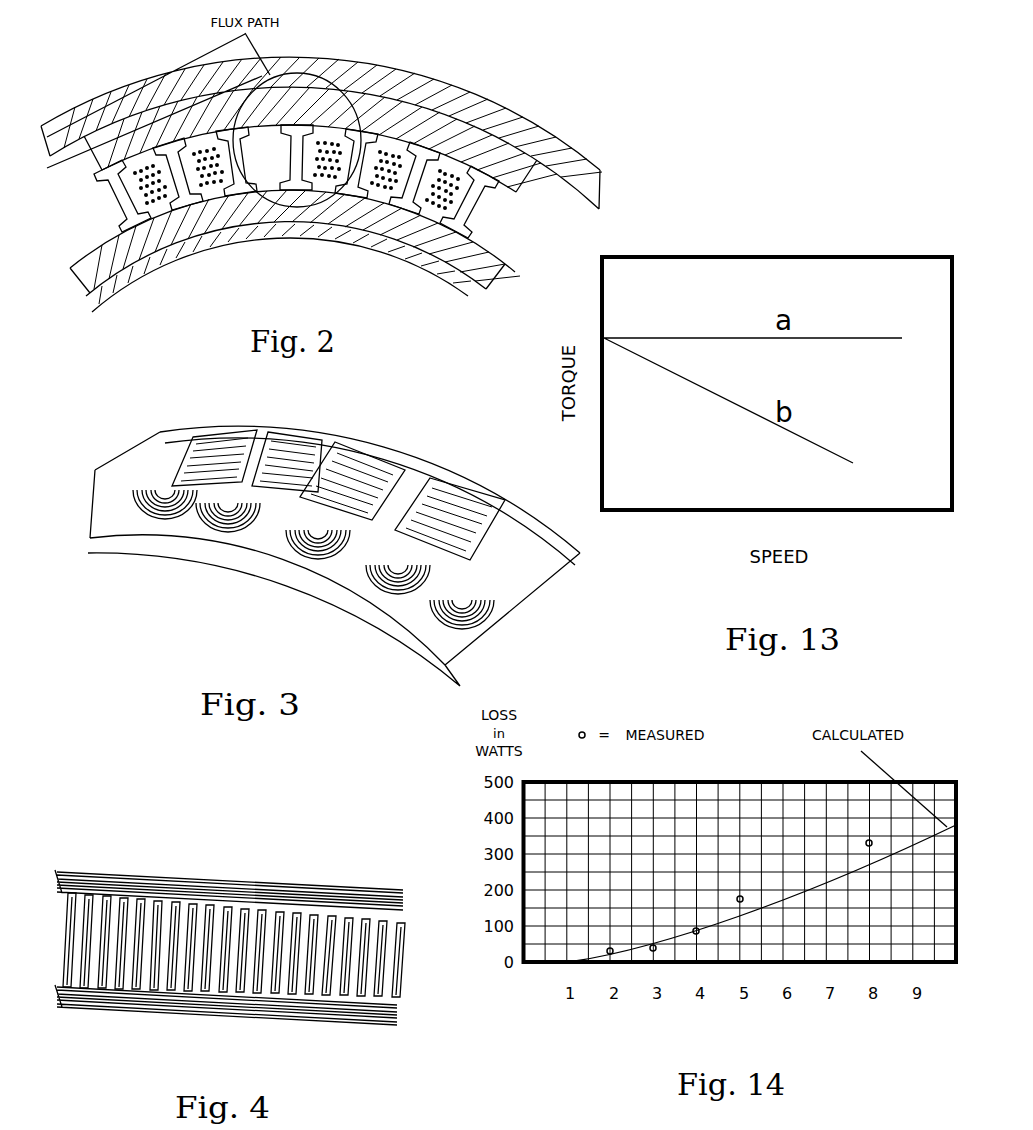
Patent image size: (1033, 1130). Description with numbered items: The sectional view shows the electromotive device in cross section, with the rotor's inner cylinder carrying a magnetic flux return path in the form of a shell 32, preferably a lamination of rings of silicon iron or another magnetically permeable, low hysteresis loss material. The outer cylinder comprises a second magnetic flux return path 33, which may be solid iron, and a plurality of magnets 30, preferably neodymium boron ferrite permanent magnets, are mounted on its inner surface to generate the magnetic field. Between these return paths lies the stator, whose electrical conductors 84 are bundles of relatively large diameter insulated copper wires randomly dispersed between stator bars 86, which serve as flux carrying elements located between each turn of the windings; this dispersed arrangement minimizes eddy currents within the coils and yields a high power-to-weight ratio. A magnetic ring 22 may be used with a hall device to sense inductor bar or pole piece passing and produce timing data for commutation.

In FIG. 2, the magnetic ring 22 is at (222, 249).
In FIG. 2, the magnets 30 is at (388, 88).
In FIG. 2, the shell 32 is at (118, 240).
In FIG. 2, the magnetic flux return path 33 is at (482, 93).
In FIG. 2, the electrical conductors 84 is at (327, 140).
In FIG. 3, the electrical conductors 84 is at (313, 567).
In FIG. 4, the electrical conductors 84 is at (403, 900).
In FIG. 2, the stator bars 86 is at (488, 177).
In FIG. 3, the stator bars 86 is at (413, 497).
In FIG. 4, the stator bars 86 is at (398, 968).